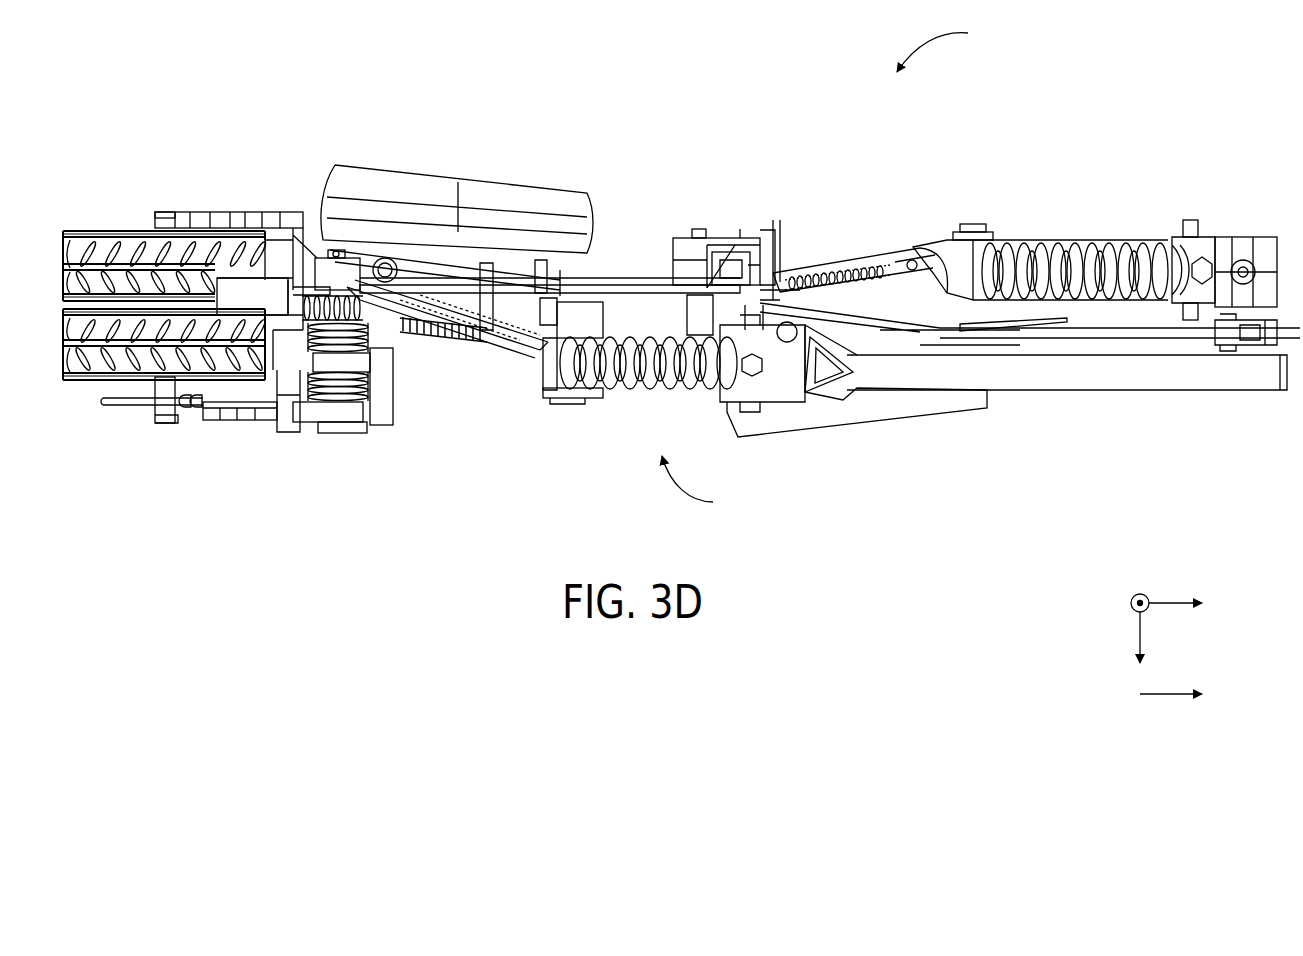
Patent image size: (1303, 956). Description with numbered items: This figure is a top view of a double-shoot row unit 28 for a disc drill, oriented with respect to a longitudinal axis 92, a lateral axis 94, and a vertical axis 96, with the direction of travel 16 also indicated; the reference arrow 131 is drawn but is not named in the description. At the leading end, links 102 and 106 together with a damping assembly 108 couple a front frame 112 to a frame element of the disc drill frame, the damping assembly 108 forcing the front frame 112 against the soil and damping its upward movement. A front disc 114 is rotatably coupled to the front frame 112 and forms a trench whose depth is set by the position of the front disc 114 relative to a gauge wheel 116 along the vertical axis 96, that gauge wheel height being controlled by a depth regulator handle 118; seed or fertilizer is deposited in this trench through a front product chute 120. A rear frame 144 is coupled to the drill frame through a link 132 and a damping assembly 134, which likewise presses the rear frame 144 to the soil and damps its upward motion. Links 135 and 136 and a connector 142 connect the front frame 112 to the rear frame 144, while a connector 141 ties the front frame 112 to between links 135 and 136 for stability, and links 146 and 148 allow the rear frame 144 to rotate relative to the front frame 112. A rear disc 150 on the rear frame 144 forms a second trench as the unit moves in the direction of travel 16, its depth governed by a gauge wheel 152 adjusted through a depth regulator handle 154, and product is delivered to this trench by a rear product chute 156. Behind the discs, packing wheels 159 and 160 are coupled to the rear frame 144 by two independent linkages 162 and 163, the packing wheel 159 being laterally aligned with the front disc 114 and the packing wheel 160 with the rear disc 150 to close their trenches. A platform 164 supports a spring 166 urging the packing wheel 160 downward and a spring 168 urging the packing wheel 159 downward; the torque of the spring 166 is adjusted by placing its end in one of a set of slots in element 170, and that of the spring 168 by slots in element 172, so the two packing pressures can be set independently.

The double-shoot row unit 28 is at (949, 47).
The crop divider assembly 131 is at (705, 486).
The packing wheel 160 is at (90, 262).
The packing wheel 159 is at (78, 345).
The linkage 163 is at (242, 221).
The element 170 is at (265, 290).
The linkage 162 is at (250, 412).
The element 172 is at (170, 413).
The spring 168 is at (350, 383).
The platform 164 is at (385, 412).
The spring 166 is at (377, 336).
The gauge wheel 152 is at (553, 201).
The rear product chute 156 is at (415, 268).
The depth regulator handle 154 is at (347, 342).
The rear frame 144 is at (490, 348).
The rear disc 150 is at (600, 278).
The connector 142 is at (628, 307).
The link 136 is at (665, 280).
The link 148 is at (712, 237).
The connector 141 is at (752, 267).
The depth regulator handle 118 is at (780, 260).
The link 135 is at (832, 303).
The front frame 112 is at (890, 262).
The damping assembly 108 is at (1102, 270).
The link 106 is at (1262, 253).
The link 102 is at (1160, 340).
The front disc 114 is at (1050, 328).
The link 132 is at (1262, 377).
The gauge wheel 116 is at (883, 408).
The front product chute 120 is at (783, 383).
The damping assembly 134 is at (657, 372).
The link 146 is at (587, 397).
The vertical axis 96 is at (1131, 598).
The longitudinal axis 92 is at (1168, 600).
The lateral axis 94 is at (1142, 628).
The direction of travel 16 is at (1162, 695).